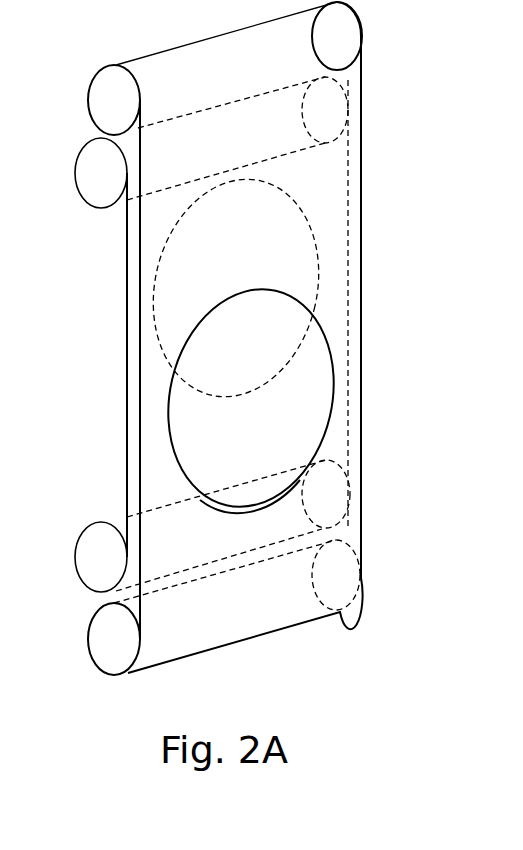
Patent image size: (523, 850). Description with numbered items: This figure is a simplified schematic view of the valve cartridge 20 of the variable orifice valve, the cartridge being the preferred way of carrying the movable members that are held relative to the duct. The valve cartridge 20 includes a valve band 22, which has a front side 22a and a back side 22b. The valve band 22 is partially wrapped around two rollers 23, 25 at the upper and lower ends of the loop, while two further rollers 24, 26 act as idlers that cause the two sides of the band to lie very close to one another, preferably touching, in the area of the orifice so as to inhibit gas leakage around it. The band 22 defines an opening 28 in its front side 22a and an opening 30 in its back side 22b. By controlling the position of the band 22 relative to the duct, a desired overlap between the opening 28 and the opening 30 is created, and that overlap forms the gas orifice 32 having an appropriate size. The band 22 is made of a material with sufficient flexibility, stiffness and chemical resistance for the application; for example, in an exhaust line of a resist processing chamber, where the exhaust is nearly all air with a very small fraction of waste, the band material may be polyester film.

The valve cartridge 20 is at (408, 135).
The valve band 22 is at (350, 90).
The front side 22a is at (355, 278).
The back side 22b is at (132, 335).
The roller 23 is at (100, 105).
The roller 24 is at (88, 185).
The roller 25 is at (100, 647).
The roller 26 is at (93, 562).
The opening 28 is at (250, 495).
The opening 30 is at (245, 179).
The gas orifice 32 is at (262, 356).